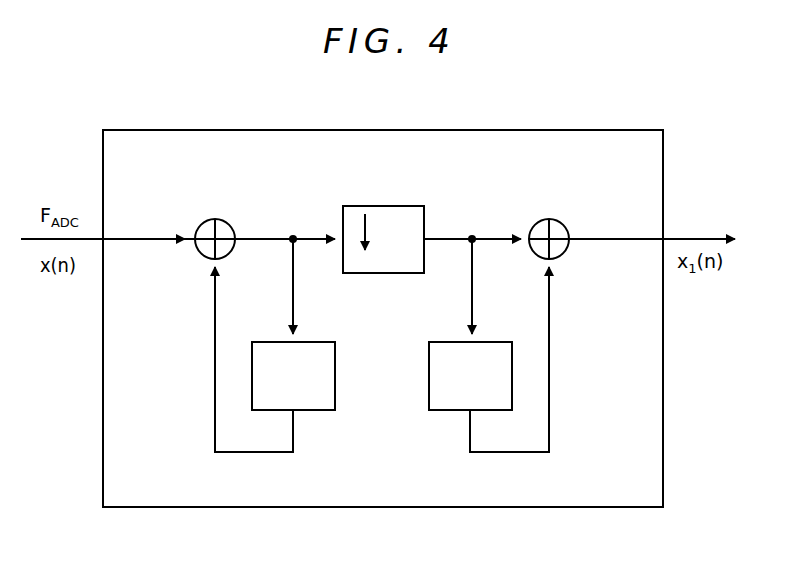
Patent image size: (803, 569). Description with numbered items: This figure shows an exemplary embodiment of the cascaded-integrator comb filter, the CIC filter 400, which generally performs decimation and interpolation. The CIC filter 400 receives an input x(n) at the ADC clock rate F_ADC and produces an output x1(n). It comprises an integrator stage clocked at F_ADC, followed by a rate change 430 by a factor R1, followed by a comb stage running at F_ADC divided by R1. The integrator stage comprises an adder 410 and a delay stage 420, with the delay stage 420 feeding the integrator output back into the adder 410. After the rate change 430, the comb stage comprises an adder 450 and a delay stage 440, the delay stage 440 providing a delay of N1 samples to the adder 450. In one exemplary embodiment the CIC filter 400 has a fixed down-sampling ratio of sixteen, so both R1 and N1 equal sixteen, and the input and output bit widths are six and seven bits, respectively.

The CIC filter 400 is at (121, 88).
The adder 410 is at (215, 218).
The delay stage 420 is at (306, 341).
The rate change 430 is at (384, 205).
The delay stage 440 is at (483, 341).
The adder 450 is at (549, 218).